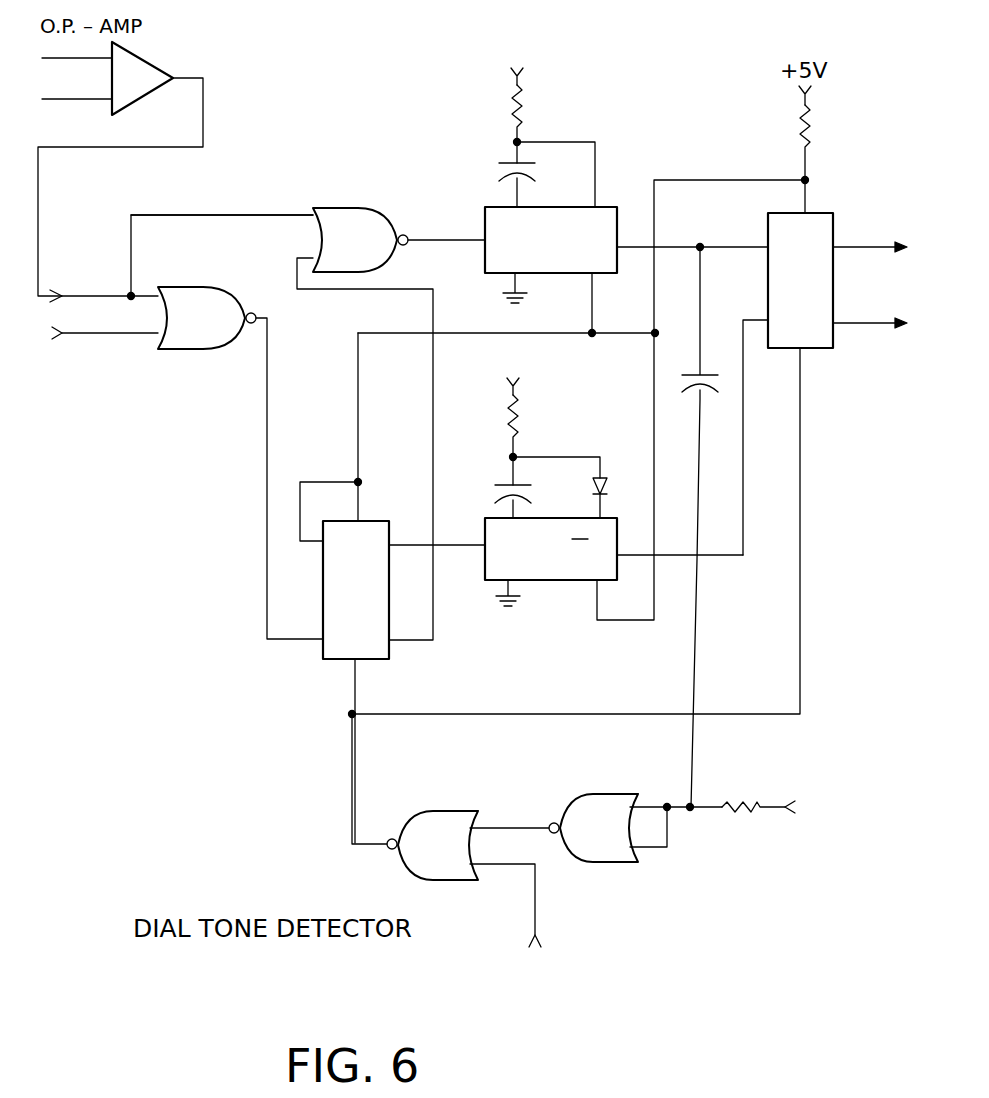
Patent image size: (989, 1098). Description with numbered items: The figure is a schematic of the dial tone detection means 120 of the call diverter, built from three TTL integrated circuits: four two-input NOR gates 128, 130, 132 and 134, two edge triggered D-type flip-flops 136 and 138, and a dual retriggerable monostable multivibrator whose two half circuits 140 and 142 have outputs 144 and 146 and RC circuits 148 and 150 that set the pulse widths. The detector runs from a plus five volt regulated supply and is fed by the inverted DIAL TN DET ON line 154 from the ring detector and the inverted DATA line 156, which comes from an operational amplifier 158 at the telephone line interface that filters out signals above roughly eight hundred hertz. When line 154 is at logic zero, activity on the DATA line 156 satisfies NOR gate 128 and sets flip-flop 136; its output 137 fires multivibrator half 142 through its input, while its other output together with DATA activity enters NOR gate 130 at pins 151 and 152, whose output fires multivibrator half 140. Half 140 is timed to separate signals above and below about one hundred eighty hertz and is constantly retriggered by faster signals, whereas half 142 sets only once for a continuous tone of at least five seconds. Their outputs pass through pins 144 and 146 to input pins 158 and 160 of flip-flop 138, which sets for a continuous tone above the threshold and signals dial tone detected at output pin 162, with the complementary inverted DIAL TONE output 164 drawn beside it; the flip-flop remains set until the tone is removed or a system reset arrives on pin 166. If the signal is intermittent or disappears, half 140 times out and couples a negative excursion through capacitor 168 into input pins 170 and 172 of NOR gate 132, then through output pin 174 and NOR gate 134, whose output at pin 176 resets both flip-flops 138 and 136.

The dial tone detection means 120 is at (330, 105).
The NOR gate 128 is at (240, 463).
The NOR gate 130 is at (399, 240).
The NOR gate 132 is at (593, 828).
The NOR gate 134 is at (490, 905).
The flip-flop 136 is at (344, 662).
The output of flip-flop 136 137 is at (393, 531).
The flip-flop 138 is at (482, 547).
The multivibrator half circuit 140 is at (551, 237).
The multivibrator half circuit 142 is at (551, 531).
The output pin of multivibrator half circuit 140 144 is at (628, 216).
The output pin of multivibrator half circuit 142 146 is at (626, 560).
The RC circuit 148 is at (511, 104).
The RC circuit 150 is at (508, 421).
The input pin of NOR gate 130 151 is at (312, 258).
The input pin of NOR gate 130 152 is at (312, 221).
The DIAL TN DET ON line 154 is at (418, 218).
The DATA line 156 is at (96, 241).
The operational amplifier 158 is at (168, 63).
The input pin of flip-flop 138 160 is at (766, 319).
The output pin of flip-flop 138 162 is at (858, 238).
The inverted dial tone output 164 is at (882, 318).
The system reset pin 166 is at (540, 953).
The capacitor 168 is at (681, 376).
The input pin of NOR gate 132 170 is at (648, 802).
The input pin of NOR gate 132 172 is at (640, 850).
The output pin of NOR gate 132 174 is at (545, 825).
The output pin of NOR gate 134 176 is at (383, 843).